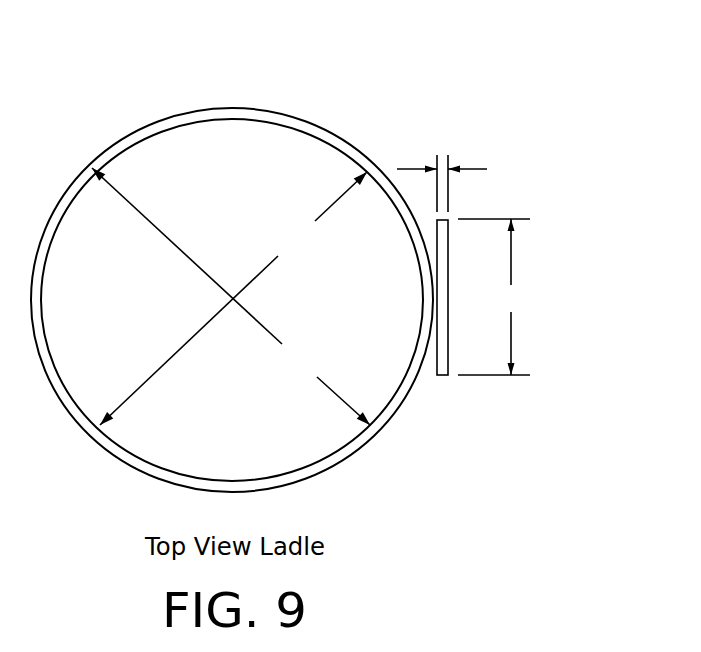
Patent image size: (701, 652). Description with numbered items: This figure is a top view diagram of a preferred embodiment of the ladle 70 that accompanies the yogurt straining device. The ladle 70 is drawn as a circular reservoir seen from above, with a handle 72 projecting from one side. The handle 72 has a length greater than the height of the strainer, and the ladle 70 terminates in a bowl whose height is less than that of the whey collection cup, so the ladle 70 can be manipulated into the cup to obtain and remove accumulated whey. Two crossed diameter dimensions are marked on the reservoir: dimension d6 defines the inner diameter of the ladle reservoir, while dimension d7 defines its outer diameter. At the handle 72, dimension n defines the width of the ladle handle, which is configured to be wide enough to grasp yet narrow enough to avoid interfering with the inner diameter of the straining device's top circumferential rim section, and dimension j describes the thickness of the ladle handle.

The ladle 70 is at (328, 96).
The handle 72 is at (446, 243).
The inner diameter of the ladle reservoir d6 is at (233, 298).
The outer diameter of the ladle reservoir d7 is at (231, 296).
The thickness of the ladle handle j is at (451, 183).
The width of the ladle handle n is at (494, 297).